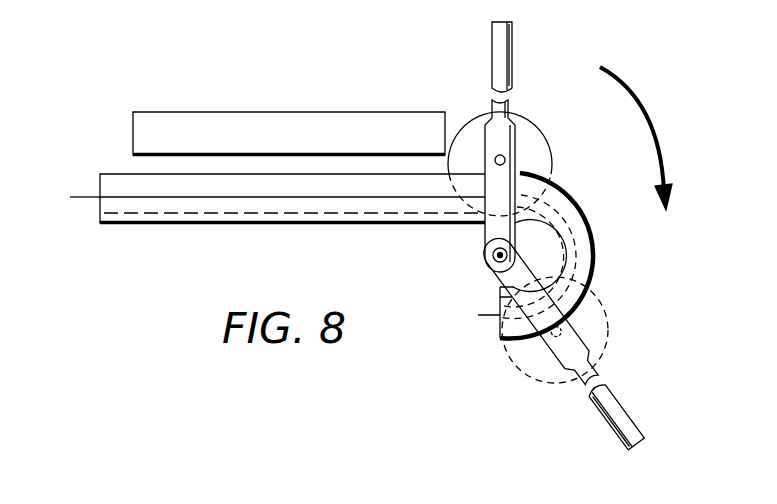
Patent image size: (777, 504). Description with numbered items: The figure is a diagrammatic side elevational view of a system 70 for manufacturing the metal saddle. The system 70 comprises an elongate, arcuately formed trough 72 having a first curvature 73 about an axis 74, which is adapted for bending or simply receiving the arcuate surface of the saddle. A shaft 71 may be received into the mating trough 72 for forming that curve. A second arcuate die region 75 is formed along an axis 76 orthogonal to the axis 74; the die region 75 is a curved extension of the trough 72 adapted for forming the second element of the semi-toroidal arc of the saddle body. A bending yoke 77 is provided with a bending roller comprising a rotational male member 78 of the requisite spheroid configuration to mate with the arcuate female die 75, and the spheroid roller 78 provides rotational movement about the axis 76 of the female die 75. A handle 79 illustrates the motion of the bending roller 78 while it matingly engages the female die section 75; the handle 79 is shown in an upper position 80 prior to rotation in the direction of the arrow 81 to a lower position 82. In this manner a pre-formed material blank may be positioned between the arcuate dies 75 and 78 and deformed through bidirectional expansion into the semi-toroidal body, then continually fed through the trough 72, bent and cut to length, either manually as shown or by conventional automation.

The system 70 is at (538, 100).
The shaft 71 is at (212, 112).
The trough 72 is at (125, 173).
The first curvature 73 is at (100, 197).
The axis 74 is at (70, 198).
The second arcuate die region 75 is at (584, 258).
The axis 76 is at (500, 256).
The bending yoke 77 is at (492, 62).
The rotational male member 78 is at (552, 147).
The handle 79 is at (508, 64).
The upper position 80 is at (490, 83).
The arrow 81 is at (662, 154).
The lower position 82 is at (606, 425).